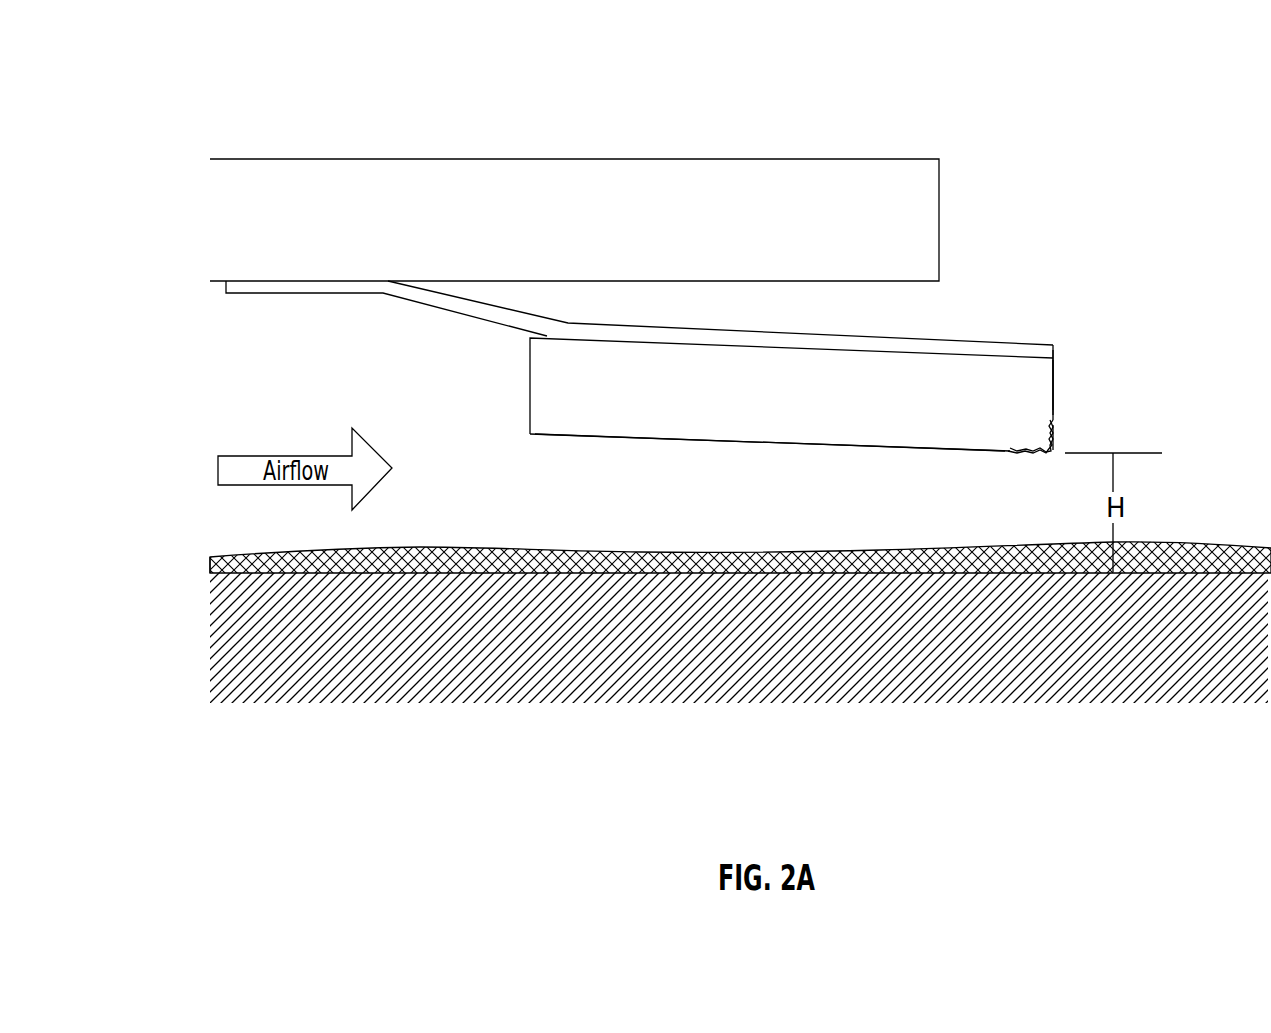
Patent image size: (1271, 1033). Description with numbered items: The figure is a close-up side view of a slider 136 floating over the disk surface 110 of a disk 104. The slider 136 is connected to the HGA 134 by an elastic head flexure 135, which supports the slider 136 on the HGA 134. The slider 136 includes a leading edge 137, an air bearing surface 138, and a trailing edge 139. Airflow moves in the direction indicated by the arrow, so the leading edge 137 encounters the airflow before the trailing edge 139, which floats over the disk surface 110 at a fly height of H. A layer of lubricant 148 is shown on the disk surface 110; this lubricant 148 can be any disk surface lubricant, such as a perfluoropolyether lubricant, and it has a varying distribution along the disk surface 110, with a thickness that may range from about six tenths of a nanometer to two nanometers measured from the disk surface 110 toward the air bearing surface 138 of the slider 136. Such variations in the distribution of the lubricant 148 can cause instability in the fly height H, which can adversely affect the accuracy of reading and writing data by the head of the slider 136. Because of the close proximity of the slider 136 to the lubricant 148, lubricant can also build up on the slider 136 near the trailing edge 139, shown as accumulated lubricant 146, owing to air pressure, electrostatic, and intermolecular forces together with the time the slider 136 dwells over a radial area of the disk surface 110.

The disk 104 is at (739, 638).
The disk surface 110 is at (216, 574).
The HGA 134 is at (841, 159).
The elastic head flexure 135 is at (314, 297).
The slider 136 is at (1062, 383).
The leading edge 137 is at (530, 387).
The air bearing surface 138 is at (570, 441).
The trailing edge 139 is at (1053, 400).
The accumulated lubricant 146 is at (1058, 427).
The lubricant 148 is at (658, 549).